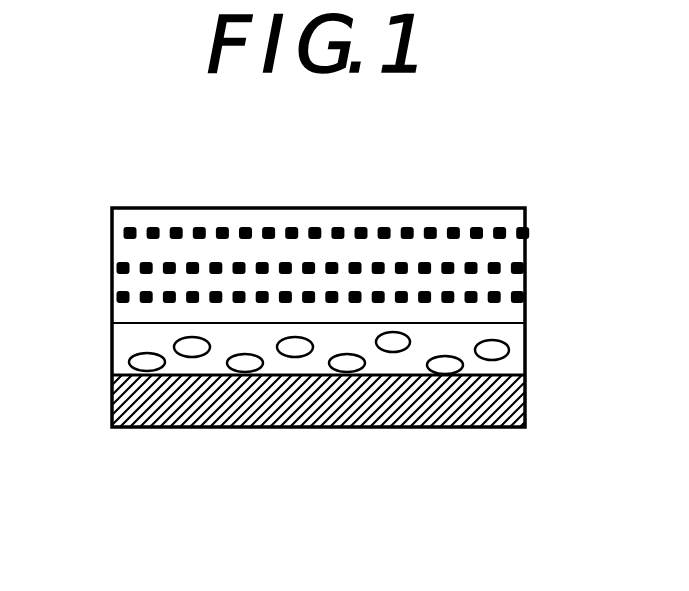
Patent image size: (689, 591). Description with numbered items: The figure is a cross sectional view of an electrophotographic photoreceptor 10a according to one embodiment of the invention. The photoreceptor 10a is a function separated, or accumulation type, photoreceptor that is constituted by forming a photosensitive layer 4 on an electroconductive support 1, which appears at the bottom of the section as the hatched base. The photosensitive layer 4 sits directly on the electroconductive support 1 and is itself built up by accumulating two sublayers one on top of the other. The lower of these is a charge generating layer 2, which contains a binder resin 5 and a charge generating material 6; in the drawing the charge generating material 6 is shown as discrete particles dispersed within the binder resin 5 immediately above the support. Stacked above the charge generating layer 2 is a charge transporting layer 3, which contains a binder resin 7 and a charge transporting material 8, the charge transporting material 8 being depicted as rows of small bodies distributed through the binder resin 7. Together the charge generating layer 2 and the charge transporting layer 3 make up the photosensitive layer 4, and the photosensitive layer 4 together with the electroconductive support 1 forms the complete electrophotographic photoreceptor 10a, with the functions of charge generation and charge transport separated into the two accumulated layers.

The electroconductive support 1 is at (457, 420).
The charge generating layer 2 is at (582, 313).
The charge transporting layer 3 is at (597, 193).
The photosensitive layer 4 is at (105, 213).
The binder resin 5 is at (517, 362).
The charge generating material 6 is at (493, 349).
The binder resin 7 is at (527, 221).
The charge transporting material 8 is at (527, 270).
The electrophotographic photoreceptor 10a is at (473, 206).